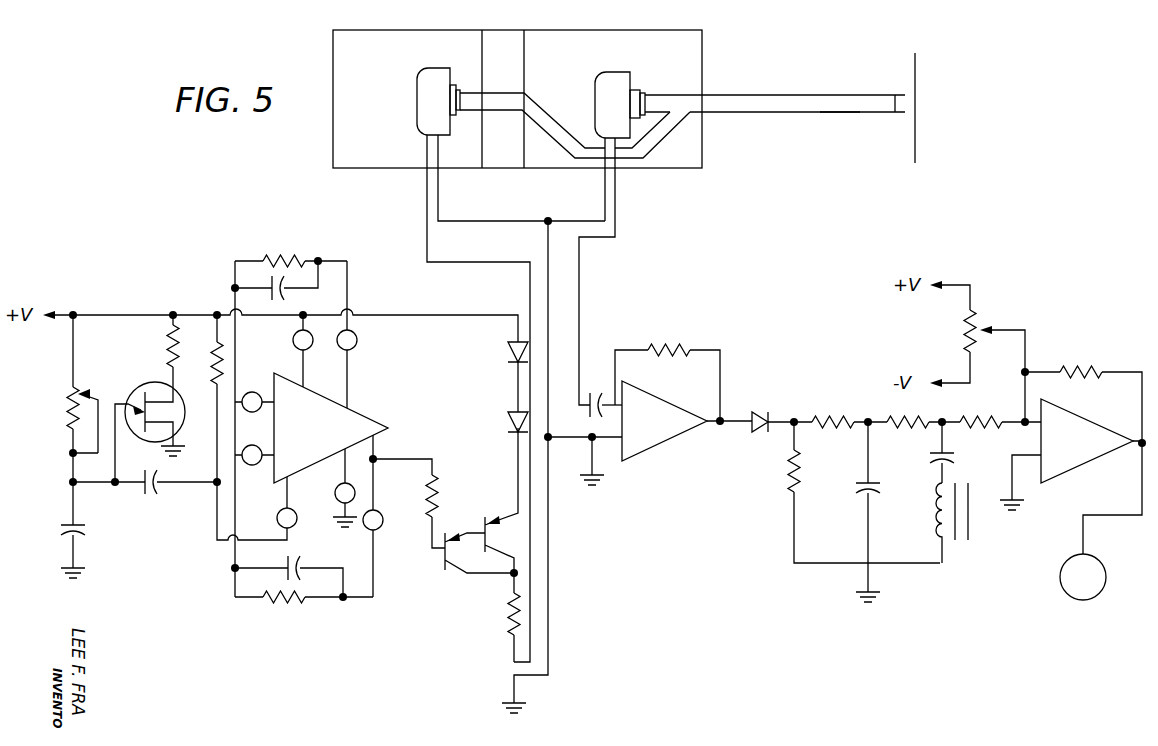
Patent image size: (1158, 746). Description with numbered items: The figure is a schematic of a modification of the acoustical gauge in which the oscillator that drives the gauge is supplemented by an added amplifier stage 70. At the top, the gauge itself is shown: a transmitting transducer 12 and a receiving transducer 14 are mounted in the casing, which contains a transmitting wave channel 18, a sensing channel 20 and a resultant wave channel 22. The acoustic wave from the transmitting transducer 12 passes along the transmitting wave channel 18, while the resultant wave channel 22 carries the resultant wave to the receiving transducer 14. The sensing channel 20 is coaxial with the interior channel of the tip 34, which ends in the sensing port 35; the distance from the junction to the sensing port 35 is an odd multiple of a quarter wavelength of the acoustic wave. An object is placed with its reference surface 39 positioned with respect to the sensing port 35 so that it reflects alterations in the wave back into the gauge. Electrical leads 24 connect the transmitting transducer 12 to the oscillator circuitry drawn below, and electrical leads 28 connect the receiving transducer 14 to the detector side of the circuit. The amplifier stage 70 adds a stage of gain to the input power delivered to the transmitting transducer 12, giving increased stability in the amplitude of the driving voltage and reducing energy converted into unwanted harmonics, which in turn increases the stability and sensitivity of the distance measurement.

The transmitting transducer 12 is at (435, 78).
The receiving transducer 14 is at (612, 84).
The transmitting wave channel 18 is at (530, 105).
The sensing channel 20 is at (788, 112).
The resultant wave channel 22 is at (648, 102).
The electrical leads 24 is at (456, 262).
The electrical leads 28 is at (615, 215).
The tip 34 is at (838, 113).
The sensing port 35 is at (910, 113).
The reference surface 39 is at (913, 63).
The amplifier stage 70 is at (356, 412).